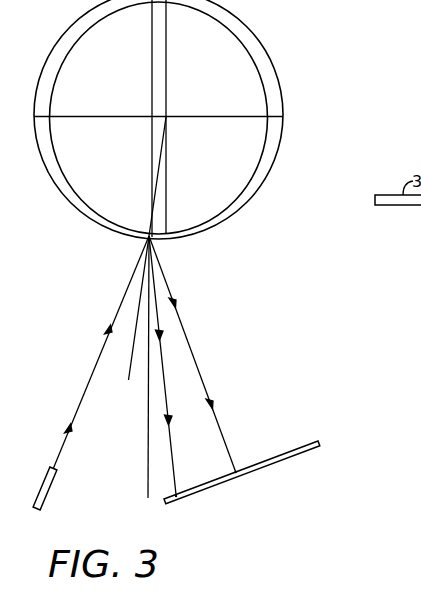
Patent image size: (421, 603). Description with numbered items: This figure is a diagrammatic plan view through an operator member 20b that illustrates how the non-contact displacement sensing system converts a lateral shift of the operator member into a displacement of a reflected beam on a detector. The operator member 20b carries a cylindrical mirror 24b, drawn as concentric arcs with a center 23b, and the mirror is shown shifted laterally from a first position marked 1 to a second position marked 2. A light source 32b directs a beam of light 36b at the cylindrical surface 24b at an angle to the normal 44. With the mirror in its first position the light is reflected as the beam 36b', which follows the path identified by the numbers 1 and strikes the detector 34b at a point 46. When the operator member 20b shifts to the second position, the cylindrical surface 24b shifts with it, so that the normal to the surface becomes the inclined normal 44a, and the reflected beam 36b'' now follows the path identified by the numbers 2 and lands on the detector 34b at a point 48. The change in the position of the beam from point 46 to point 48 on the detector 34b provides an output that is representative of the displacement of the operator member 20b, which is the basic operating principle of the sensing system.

The operator member 20b is at (56, 190).
The cylindrical mirror 24b is at (258, 189).
The center of curvature 23b is at (147, 119).
The normal 44a is at (129, 380).
The normal 44 is at (148, 437).
The beam of light 36b is at (98, 352).
The light source 32b is at (50, 482).
The reflected beam 36b' is at (198, 354).
The reflected beam 36b'' is at (186, 365).
The position 1 is at (198, 349).
The position 2 is at (171, 377).
The detector 34b is at (214, 487).
The point 46 is at (237, 473).
The point 48 is at (178, 501).